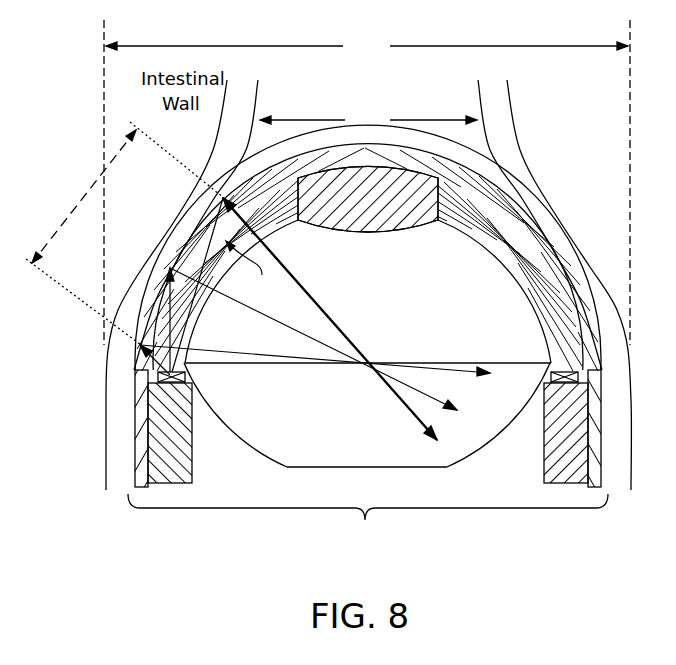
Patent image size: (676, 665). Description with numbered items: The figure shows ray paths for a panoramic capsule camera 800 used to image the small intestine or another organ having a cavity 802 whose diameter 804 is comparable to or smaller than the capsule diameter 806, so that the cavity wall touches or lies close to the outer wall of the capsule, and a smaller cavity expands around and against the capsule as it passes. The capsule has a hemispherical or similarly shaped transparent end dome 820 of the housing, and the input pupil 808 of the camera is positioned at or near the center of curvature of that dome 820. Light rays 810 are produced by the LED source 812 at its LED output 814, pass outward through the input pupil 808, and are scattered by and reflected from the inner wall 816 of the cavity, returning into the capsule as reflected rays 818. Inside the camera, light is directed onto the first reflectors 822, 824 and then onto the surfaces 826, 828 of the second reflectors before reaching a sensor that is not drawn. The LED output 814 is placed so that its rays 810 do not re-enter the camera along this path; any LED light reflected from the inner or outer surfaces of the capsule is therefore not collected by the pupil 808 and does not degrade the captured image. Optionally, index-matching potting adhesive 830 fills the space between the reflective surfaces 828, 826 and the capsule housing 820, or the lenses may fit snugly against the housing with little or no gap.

The panoramic capsule camera 800 is at (472, 173).
The cavity 802 is at (402, 97).
The cavity diameter 804 is at (368, 119).
The capsule diameter 806 is at (367, 294).
The input pupil 808 is at (125, 233).
The light rays 810 is at (200, 221).
The LED source 812 is at (194, 466).
The LED output 814 is at (187, 378).
The inner wall of the cavity 816 is at (133, 288).
The reflected rays 818 is at (334, 325).
The transparent capsule end dome 820 is at (140, 423).
The first reflector 822 is at (500, 437).
The first reflector 824 is at (236, 426).
The surface of second reflector 826 is at (457, 227).
The surface of second reflector 828 is at (278, 228).
The index-matching potting adhesive 830 is at (368, 268).